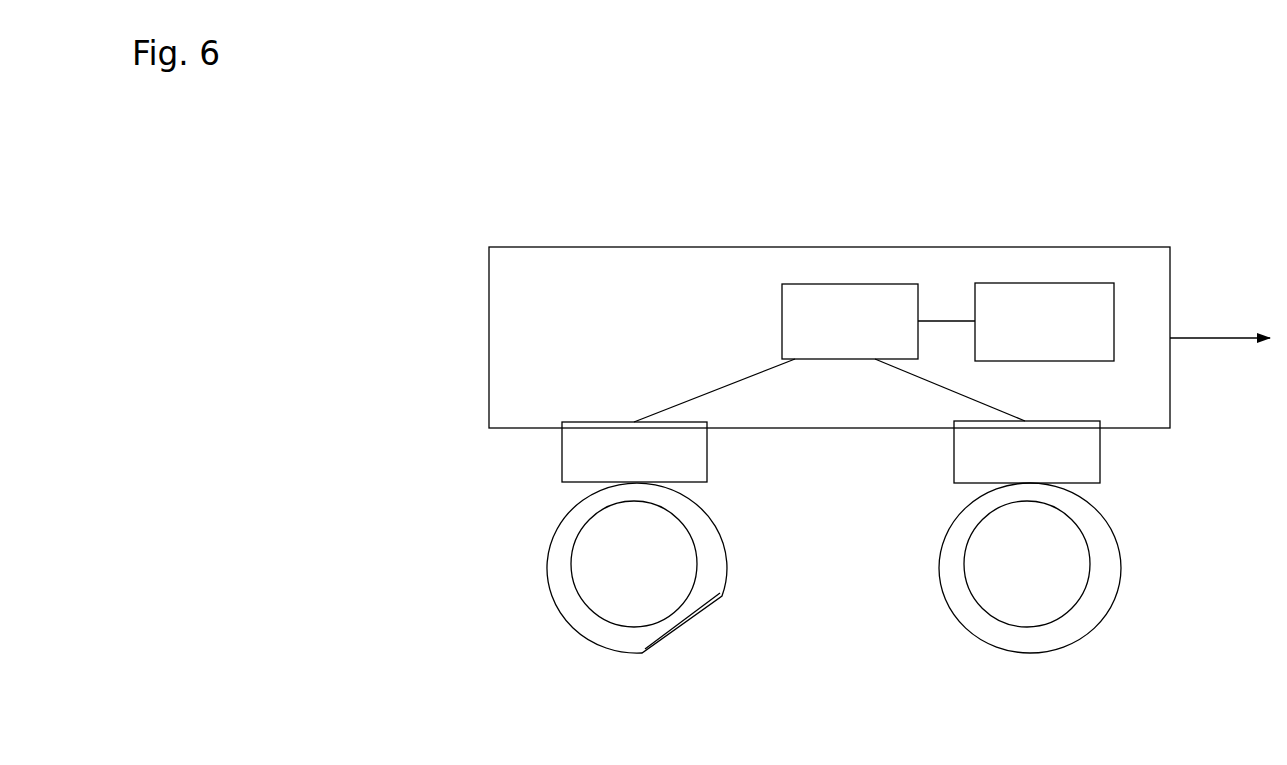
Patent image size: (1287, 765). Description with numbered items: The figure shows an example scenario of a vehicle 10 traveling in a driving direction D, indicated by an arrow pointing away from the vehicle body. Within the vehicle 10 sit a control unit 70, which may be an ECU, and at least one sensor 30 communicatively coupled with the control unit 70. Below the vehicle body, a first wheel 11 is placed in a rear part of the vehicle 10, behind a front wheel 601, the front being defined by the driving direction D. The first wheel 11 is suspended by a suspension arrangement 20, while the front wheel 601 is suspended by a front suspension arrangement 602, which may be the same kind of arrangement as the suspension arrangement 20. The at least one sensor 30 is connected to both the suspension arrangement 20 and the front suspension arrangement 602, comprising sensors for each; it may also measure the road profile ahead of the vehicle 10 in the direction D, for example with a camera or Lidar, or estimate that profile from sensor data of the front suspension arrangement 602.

The vehicle 10 is at (757, 248).
The at least one sensor 30 is at (837, 337).
The control unit 70 is at (1032, 337).
The suspension arrangement 20 is at (620, 465).
The front suspension arrangement 602 is at (1053, 465).
The first wheel 11 is at (523, 539).
The front wheel 601 is at (918, 540).
The driving direction D is at (1188, 338).